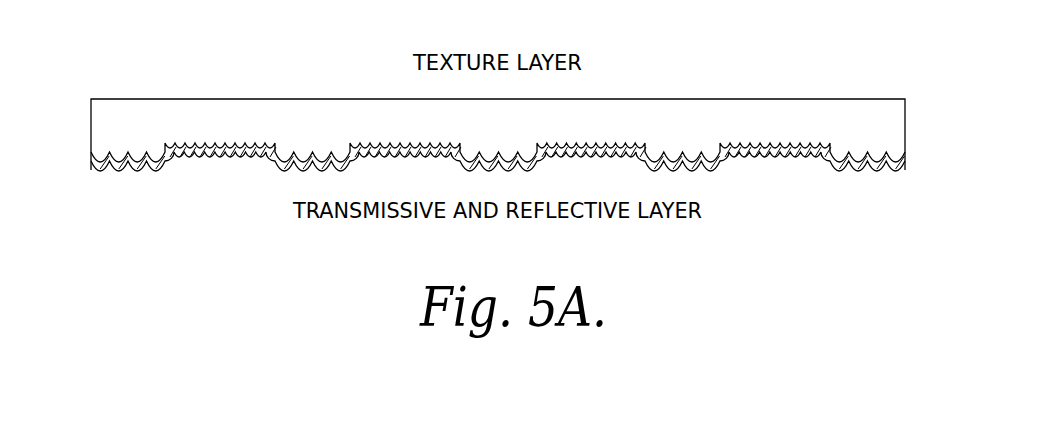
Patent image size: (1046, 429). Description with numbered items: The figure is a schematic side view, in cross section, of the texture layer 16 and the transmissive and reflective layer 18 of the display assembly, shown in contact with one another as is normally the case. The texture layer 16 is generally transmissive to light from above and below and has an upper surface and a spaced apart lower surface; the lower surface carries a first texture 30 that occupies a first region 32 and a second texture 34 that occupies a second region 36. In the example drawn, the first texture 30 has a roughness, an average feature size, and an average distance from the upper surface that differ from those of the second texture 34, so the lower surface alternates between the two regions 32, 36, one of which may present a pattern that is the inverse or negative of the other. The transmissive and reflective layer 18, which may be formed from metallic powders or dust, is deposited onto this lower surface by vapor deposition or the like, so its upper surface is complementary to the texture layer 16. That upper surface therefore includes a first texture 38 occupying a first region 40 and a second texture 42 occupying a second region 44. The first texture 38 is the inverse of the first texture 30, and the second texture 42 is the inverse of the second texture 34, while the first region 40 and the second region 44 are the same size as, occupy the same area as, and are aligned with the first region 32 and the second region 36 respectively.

The texture layer 16 is at (105, 108).
The transmissive and reflective layer 18 is at (102, 165).
The first texture 30 is at (689, 84).
The first region 32 is at (680, 128).
The second texture 34 is at (827, 96).
The second region 36 is at (793, 125).
The first texture 38 is at (883, 219).
The first region 40 is at (886, 179).
The second texture 42 is at (775, 212).
The second region 44 is at (774, 166).